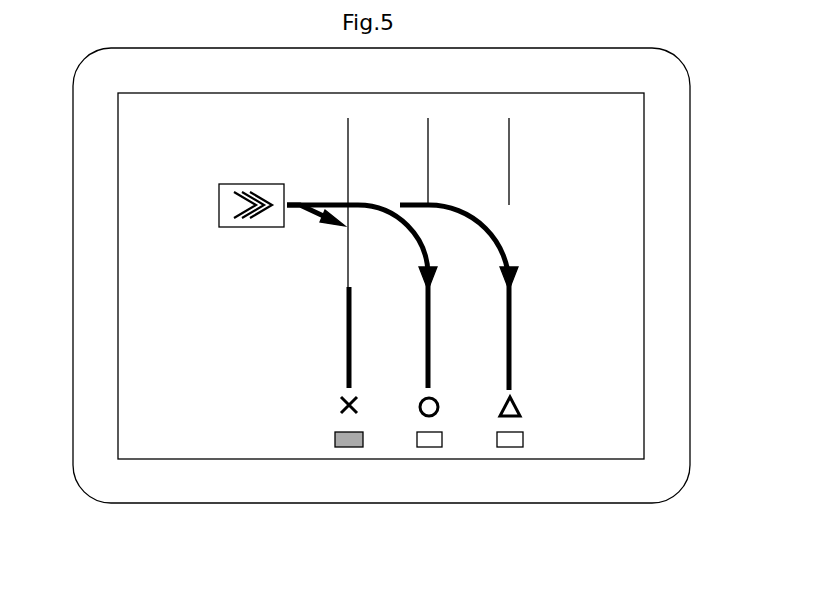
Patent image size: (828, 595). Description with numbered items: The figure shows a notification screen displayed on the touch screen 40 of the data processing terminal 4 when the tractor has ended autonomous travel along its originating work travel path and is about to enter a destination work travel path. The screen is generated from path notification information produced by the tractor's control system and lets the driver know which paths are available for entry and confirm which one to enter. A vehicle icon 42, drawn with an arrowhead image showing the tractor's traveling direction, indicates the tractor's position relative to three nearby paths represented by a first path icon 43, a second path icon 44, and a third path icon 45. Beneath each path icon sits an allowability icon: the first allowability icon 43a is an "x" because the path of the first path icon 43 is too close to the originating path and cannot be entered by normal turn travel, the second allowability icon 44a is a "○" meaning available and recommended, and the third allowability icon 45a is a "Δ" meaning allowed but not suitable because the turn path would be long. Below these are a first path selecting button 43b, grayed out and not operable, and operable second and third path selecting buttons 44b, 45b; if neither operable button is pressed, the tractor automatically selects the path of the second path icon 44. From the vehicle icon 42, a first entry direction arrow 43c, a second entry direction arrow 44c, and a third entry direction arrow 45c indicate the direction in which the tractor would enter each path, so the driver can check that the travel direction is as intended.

The data processing terminal 4 is at (690, 148).
The touch screen 40 is at (143, 226).
The vehicle icon 42 is at (251, 184).
The first path icon 43 is at (346, 330).
The first allowability icon 43a is at (340, 405).
The first path selecting button 43b is at (335, 439).
The first entry direction arrow 43c is at (316, 216).
The second path icon 44 is at (426, 330).
The second allowability icon 44a is at (418, 405).
The second path selecting button 44b is at (415, 445).
The second entry direction arrow 44c is at (402, 216).
The third path icon 45 is at (507, 330).
The third allowability icon 45a is at (522, 410).
The third path selecting button 45b is at (524, 439).
The third entry direction arrow 45c is at (477, 215).